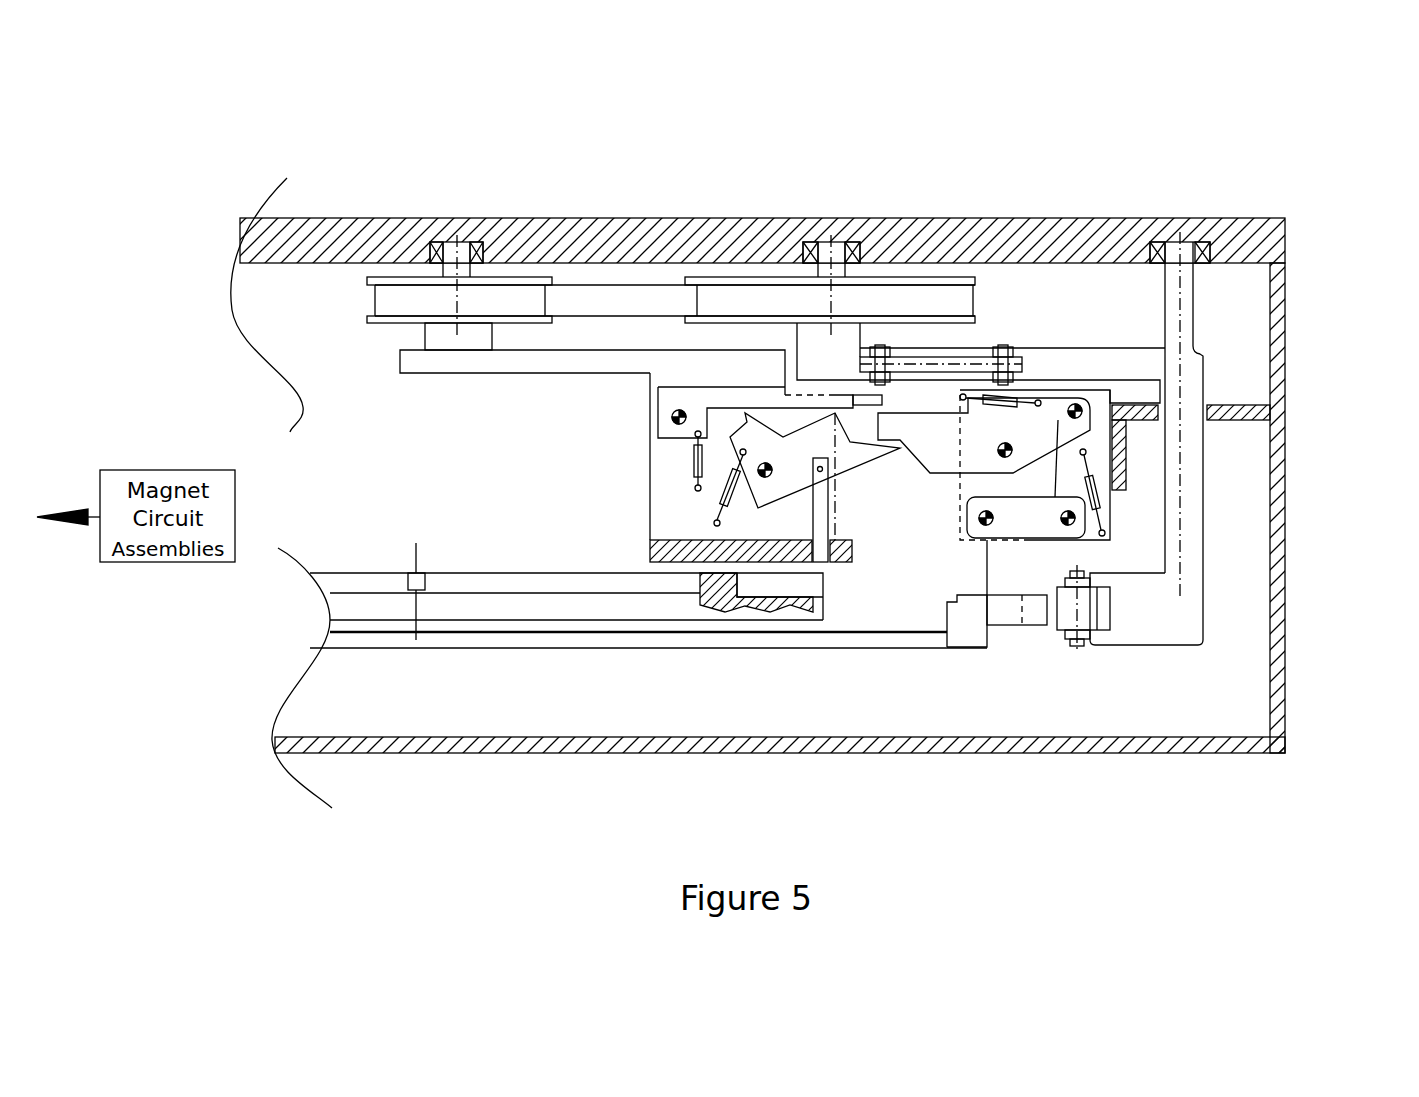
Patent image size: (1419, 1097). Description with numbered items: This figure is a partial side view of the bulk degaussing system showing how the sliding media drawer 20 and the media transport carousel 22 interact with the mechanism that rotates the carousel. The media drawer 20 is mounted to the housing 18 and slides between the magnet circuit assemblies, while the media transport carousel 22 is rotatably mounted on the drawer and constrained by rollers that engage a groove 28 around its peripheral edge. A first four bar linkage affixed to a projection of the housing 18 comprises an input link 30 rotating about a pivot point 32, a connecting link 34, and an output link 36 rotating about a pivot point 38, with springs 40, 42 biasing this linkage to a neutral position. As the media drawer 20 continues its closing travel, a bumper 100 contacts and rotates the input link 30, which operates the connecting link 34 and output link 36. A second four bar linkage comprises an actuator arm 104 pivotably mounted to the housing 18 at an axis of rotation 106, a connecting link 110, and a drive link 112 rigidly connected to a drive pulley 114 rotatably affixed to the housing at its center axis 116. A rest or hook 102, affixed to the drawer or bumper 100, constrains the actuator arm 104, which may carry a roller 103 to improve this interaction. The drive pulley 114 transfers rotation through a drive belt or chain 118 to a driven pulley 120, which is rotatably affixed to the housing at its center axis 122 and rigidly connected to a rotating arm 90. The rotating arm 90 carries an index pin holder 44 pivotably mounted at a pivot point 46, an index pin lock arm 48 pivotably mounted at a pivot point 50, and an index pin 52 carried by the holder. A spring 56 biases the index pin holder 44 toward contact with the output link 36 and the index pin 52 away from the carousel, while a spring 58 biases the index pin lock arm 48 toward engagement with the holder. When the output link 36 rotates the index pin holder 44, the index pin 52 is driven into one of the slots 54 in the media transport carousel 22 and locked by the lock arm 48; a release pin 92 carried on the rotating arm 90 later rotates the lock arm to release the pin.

The housing 18 is at (300, 243).
The media drawer 20 is at (447, 640).
The media transport carousel 22 is at (358, 578).
The groove 28 is at (522, 613).
The input link 30 is at (998, 552).
The pivot point 32 is at (986, 518).
The connecting link 34 is at (1070, 465).
The output link 36 is at (1053, 415).
The pivot point 38 is at (1005, 450).
The spring 40 is at (1100, 508).
The spring 42 is at (1018, 402).
The index pin holder 44 is at (860, 452).
The pivot point 46 is at (743, 455).
The index pin lock arm 48 is at (672, 395).
The pivot point 50 is at (679, 417).
The index pin 52 is at (822, 507).
The slots 54 is at (785, 578).
The spring 56 is at (763, 472).
The spring 58 is at (698, 462).
The rotating arm 90 is at (415, 382).
The release pin 92 is at (868, 398).
The bumper 100 is at (972, 593).
The rest or hook 102 is at (1033, 617).
The roller 103 is at (1087, 610).
The actuator arm 104 is at (1167, 610).
The axis of rotation 106 is at (1180, 216).
The connecting link 110 is at (938, 363).
The drive link 112 is at (848, 363).
The drive pulley 114 is at (743, 283).
The center axis 116 is at (830, 216).
The drive belt or chain 118 is at (658, 297).
The driven pulley 120 is at (525, 283).
The center axis 122 is at (460, 216).